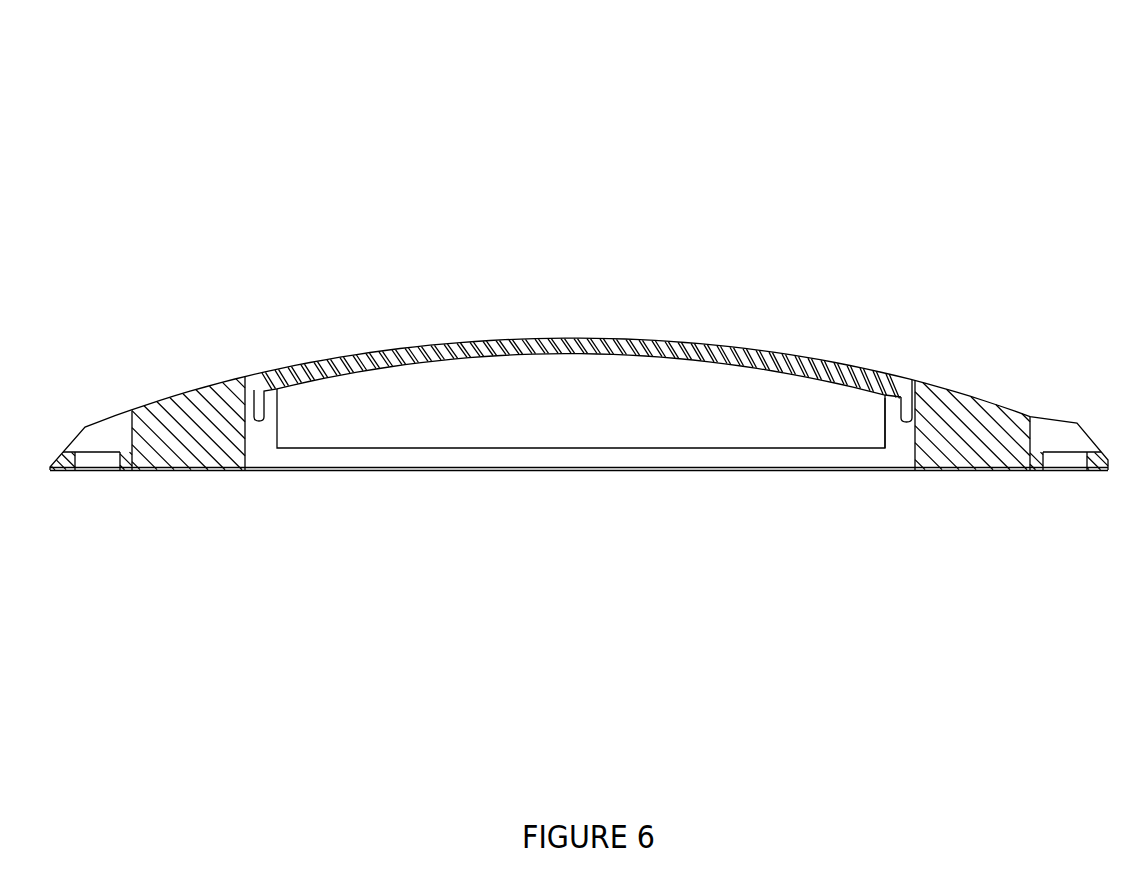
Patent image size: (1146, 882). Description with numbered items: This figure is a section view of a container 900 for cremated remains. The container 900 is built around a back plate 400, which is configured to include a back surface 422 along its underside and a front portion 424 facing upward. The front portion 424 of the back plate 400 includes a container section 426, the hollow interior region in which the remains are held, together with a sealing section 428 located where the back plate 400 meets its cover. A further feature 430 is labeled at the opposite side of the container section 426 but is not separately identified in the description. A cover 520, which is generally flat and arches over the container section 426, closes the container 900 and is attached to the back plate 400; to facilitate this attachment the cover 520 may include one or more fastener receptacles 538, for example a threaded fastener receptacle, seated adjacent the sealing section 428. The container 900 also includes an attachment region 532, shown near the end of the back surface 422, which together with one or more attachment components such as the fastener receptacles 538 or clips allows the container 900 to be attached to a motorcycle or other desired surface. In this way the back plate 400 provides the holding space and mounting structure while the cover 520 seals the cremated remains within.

The container 900 is at (493, 122).
The back plate 400 is at (663, 466).
The back surface 422 is at (452, 488).
The front portion 424 is at (924, 411).
The container section 426 is at (413, 370).
The sealing section 428 is at (883, 381).
The groove 430 is at (247, 376).
The cover 520 is at (687, 353).
The attachment region 532 is at (122, 489).
The fastener receptacles 538 is at (903, 378).